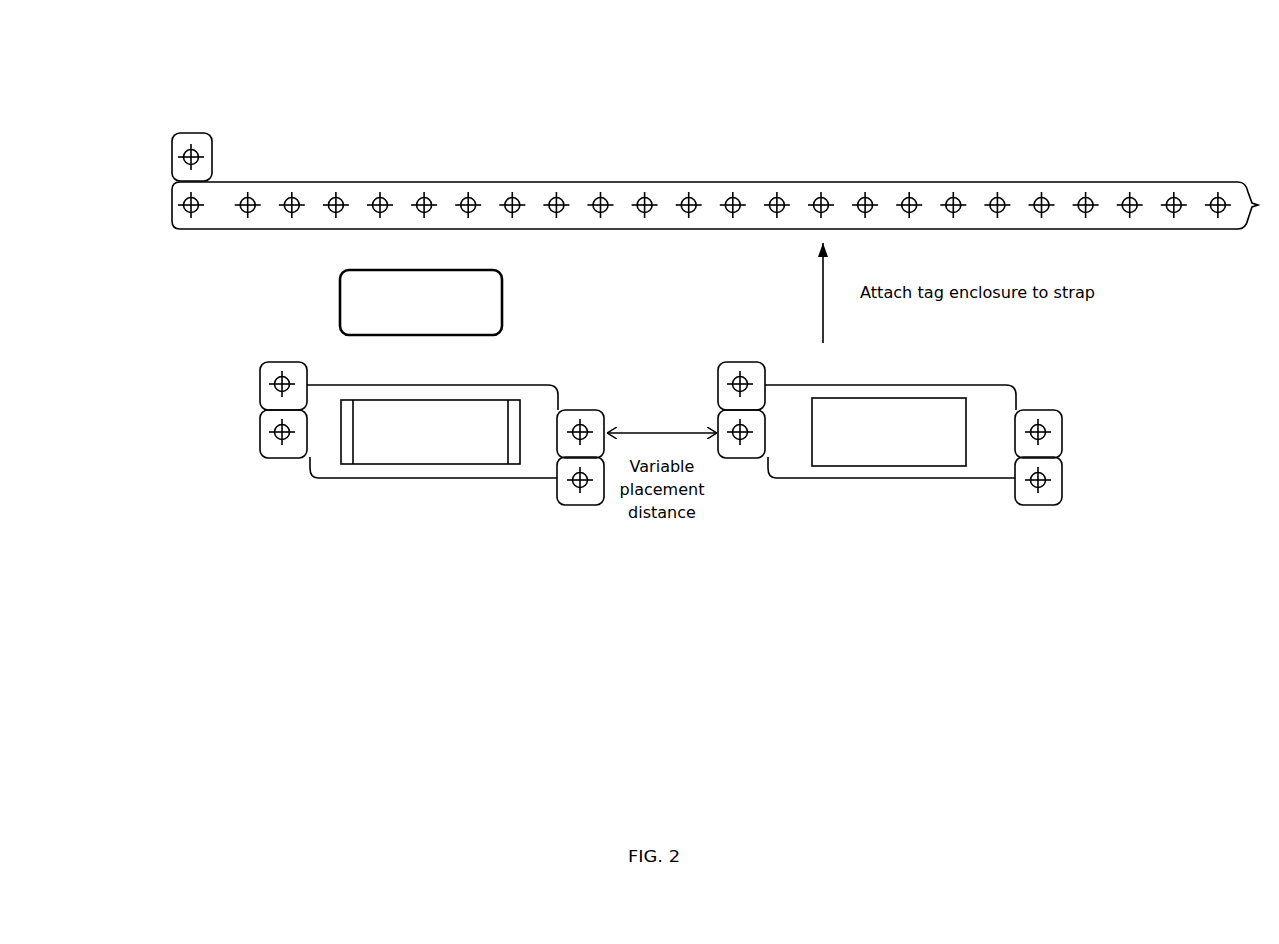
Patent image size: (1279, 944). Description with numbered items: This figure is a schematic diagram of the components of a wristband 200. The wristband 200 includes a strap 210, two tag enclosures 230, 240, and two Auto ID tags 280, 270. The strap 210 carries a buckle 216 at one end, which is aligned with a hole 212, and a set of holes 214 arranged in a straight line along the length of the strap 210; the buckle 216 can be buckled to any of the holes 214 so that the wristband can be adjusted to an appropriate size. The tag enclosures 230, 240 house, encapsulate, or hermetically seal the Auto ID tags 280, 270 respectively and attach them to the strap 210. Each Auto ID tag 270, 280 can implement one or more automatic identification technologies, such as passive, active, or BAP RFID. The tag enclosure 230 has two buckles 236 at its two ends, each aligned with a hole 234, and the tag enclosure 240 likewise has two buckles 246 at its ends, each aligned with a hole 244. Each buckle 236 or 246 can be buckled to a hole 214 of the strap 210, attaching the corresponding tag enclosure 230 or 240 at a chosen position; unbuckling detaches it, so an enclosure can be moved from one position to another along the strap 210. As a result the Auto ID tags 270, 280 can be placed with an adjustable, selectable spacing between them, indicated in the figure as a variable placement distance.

The wristband 200 is at (678, 63).
The strap 210 is at (396, 150).
The hole 212 is at (165, 238).
The holes 214 is at (930, 198).
The buckle 216 is at (315, 96).
The tag enclosure 230 is at (223, 457).
The holes 234 is at (550, 451).
The buckles 236 is at (560, 510).
The tag enclosure 240 is at (1215, 583).
The holes 244 is at (1013, 440).
The buckles 246 is at (1027, 508).
The Auto ID tag 270 is at (922, 435).
The Auto ID tag 280 is at (497, 418).